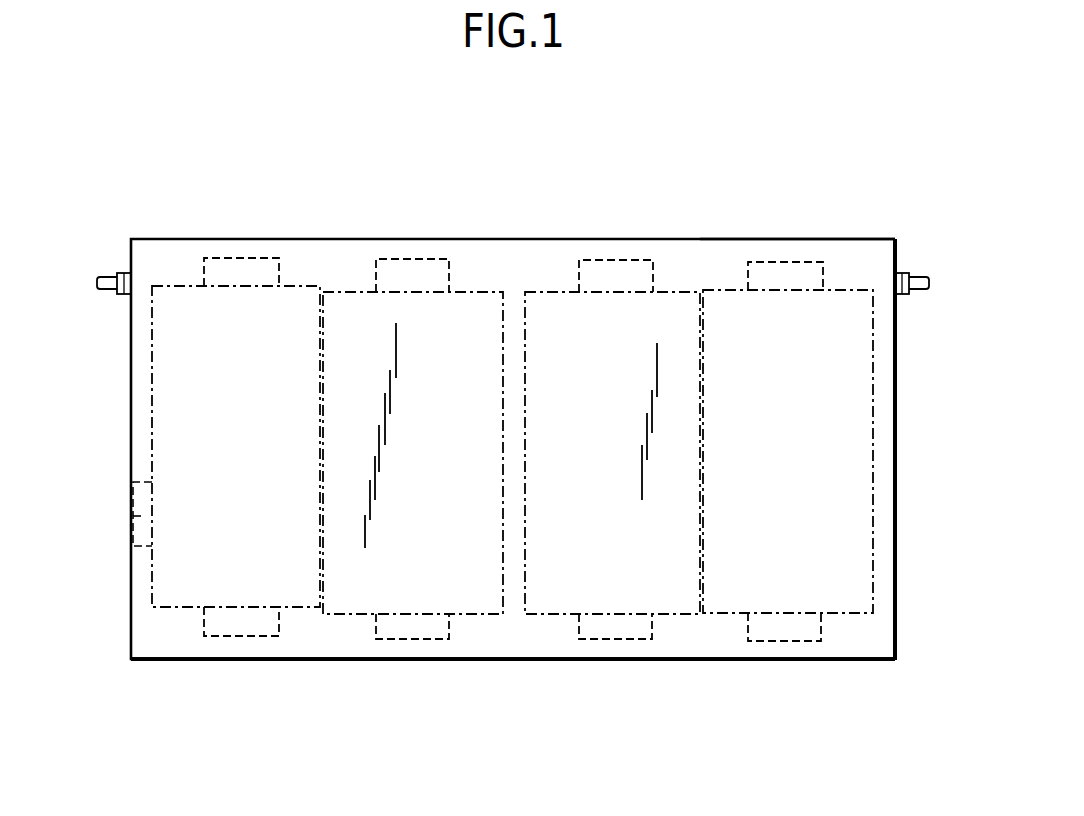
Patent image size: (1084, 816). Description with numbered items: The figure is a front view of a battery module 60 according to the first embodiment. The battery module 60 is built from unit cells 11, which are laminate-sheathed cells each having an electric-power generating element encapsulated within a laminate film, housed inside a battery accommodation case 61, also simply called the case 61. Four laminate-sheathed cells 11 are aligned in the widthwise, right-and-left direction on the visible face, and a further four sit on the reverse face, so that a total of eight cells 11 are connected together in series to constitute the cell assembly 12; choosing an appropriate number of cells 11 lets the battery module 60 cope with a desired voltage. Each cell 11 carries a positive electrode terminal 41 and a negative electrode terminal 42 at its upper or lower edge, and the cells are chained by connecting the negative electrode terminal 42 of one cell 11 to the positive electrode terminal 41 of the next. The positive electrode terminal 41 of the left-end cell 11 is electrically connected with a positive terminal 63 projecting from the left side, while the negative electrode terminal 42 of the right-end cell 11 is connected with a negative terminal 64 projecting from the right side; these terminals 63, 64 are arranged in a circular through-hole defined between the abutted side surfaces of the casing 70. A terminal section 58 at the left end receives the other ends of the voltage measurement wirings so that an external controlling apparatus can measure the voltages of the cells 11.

The unit cell 11 is at (295, 600).
The cell assembly 12 is at (750, 726).
The positive electrode terminal 41 is at (242, 270).
The negative electrode terminal 42 is at (787, 272).
The terminal section 58 is at (130, 518).
The battery module 60 is at (205, 173).
The battery accommodation case 61 is at (368, 237).
The positive terminal 63 is at (110, 272).
The negative terminal 64 is at (913, 282).
The casing 70 is at (849, 240).